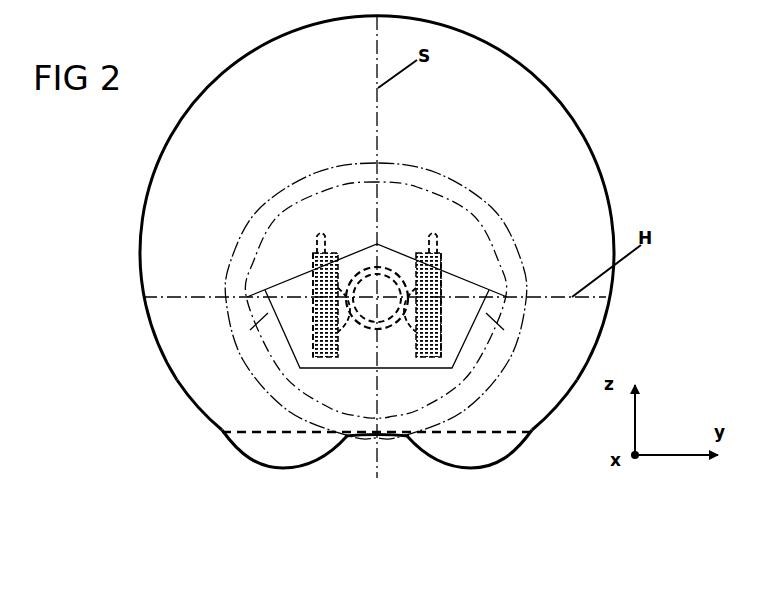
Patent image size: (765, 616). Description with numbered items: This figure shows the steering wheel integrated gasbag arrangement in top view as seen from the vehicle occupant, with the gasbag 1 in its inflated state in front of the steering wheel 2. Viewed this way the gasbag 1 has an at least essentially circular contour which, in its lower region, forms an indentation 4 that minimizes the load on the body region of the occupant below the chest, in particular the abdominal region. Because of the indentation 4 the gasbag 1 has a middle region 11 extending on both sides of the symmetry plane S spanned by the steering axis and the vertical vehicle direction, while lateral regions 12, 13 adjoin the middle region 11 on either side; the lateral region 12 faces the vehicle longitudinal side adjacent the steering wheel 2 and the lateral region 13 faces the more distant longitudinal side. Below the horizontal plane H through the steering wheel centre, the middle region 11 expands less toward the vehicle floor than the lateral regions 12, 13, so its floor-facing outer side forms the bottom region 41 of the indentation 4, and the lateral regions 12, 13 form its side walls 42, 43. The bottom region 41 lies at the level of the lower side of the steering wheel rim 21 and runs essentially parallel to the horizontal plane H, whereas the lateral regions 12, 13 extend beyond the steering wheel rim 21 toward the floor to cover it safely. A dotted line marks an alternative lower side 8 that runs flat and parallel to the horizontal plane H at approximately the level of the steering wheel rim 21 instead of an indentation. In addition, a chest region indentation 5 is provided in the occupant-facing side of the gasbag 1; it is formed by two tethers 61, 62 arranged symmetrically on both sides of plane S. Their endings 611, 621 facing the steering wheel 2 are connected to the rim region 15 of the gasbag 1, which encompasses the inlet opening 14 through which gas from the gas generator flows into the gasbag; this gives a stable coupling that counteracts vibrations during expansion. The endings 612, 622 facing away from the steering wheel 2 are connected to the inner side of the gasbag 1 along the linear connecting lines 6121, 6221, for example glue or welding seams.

The gasbag 1 is at (387, 275).
The steering wheel 2 is at (379, 270).
The steering wheel rim 21 is at (487, 201).
The indentation 4 is at (377, 490).
The bottom region 41 is at (358, 438).
The side wall 42 is at (312, 464).
The side wall 43 is at (450, 466).
The chest region indentation 5 is at (362, 265).
The rim region 15 is at (365, 272).
The lower side 8 is at (273, 435).
The middle region 11 is at (402, 398).
The lateral region 12 is at (215, 405).
The lateral region 13 is at (542, 400).
The inlet opening 14 is at (392, 308).
The tether 61 is at (284, 283).
The ending 611 is at (341, 314).
The ending 612 is at (323, 265).
The connecting line 6121 is at (317, 314).
The tether 62 is at (480, 289).
The ending 621 is at (415, 284).
The ending 622 is at (447, 261).
The connecting line 6221 is at (435, 325).